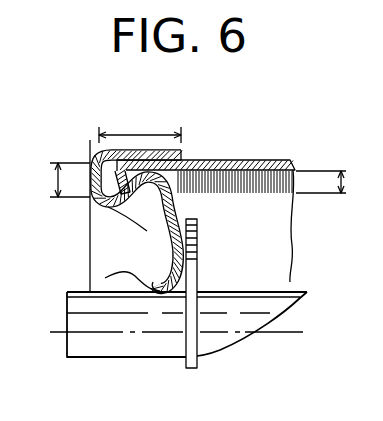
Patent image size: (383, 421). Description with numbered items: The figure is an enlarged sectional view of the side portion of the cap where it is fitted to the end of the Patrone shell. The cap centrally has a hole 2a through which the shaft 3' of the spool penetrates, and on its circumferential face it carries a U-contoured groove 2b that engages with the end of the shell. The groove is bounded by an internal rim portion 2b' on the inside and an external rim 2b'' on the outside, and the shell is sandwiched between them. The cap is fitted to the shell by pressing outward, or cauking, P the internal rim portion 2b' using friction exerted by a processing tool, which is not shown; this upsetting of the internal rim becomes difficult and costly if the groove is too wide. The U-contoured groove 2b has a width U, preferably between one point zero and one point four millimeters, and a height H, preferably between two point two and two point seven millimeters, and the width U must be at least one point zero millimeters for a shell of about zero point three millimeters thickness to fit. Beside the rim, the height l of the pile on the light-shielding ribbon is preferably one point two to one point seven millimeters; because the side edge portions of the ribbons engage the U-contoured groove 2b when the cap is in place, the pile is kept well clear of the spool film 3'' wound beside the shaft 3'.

The hole 2a is at (105, 278).
The U-contoured groove 2b is at (114, 201).
The internal rim portion 2b' is at (91, 204).
The external rim 2b'' is at (206, 140).
The shaft 3' is at (178, 350).
The spool film 3'' is at (217, 293).
The height of U-contoured groove H is at (133, 133).
The width of U-contoured groove U is at (50, 182).
The pressing outward (cauking) P is at (147, 231).
The height of pile l is at (341, 182).